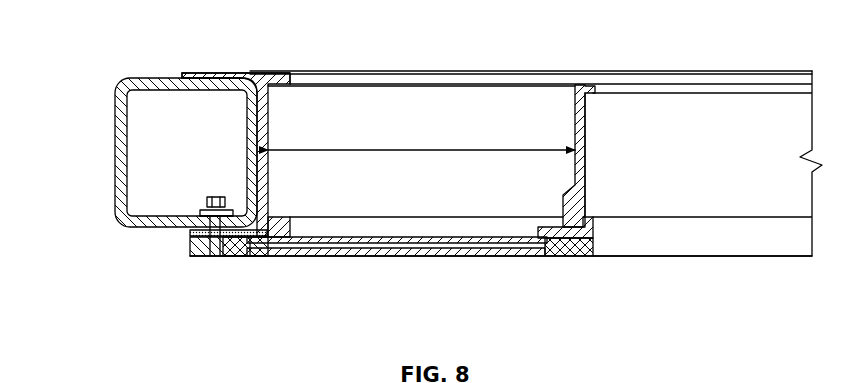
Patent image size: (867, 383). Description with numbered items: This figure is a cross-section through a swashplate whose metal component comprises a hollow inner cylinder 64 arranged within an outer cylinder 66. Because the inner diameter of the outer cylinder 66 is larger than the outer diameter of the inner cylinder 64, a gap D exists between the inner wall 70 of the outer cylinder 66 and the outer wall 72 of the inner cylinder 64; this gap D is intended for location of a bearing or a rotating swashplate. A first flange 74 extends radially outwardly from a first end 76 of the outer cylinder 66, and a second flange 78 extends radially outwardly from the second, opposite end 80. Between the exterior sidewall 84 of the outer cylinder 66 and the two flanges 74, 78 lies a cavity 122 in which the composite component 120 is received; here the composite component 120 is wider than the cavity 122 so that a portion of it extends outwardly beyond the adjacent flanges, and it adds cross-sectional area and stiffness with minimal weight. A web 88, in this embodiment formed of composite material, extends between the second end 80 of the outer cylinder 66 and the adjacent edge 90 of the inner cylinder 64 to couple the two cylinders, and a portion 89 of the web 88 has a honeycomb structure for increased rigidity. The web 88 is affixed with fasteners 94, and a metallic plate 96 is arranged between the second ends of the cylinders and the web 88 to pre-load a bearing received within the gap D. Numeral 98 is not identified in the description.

The hollow inner cylinder 64 is at (591, 120).
The outer cylinder 66 is at (278, 66).
The inner wall 70 is at (270, 126).
The outer wall 72 is at (573, 158).
The first flange 74 is at (212, 72).
The first end 76 is at (249, 72).
The second flange 78 is at (186, 232).
The second end 80 is at (266, 238).
The exterior sidewall 84 is at (253, 146).
The web 88 is at (447, 257).
The portion 89 is at (405, 249).
The adjacent edge 90 is at (585, 247).
The fasteners 94 is at (229, 250).
The metallic plate 96 is at (281, 223).
The plate 98 is at (340, 237).
The composite component 120 is at (121, 77).
The cavity 122 is at (226, 73).
The gap D is at (420, 150).